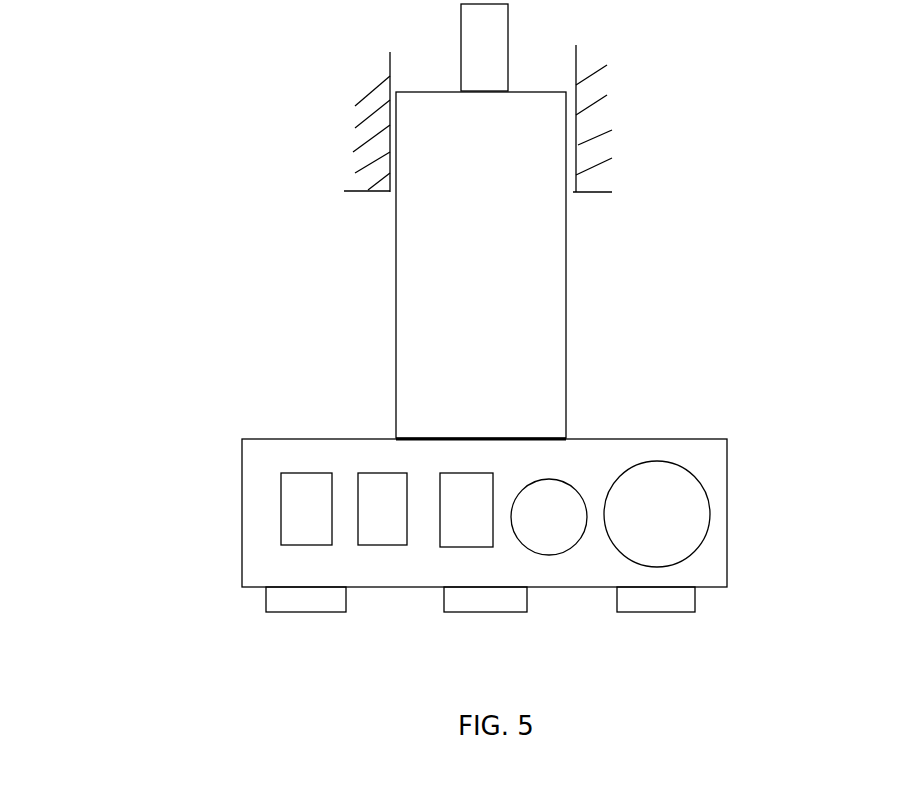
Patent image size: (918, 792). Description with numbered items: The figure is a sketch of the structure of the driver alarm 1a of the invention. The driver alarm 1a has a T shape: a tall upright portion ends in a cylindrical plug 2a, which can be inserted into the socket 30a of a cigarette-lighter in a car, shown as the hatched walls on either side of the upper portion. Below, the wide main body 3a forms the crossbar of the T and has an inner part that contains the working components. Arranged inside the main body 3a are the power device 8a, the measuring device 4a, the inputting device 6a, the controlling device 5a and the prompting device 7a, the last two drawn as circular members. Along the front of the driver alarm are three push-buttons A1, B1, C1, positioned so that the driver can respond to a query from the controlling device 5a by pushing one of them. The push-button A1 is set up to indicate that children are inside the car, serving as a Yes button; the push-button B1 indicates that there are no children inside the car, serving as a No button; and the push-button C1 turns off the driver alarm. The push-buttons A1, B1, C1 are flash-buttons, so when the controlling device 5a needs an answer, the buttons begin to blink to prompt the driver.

The socket 30a is at (593, 126).
The cylindrical plug 2a is at (532, 318).
The driver alarm 1a is at (587, 377).
The main body 3a is at (569, 573).
The power device 8a is at (283, 523).
The measuring device 4a is at (386, 498).
The inputting device 6a is at (473, 500).
The controlling device 5a is at (560, 503).
The prompting device 7a is at (698, 510).
The push-button A1 is at (326, 647).
The push-button B1 is at (497, 653).
The push-button C1 is at (672, 651).